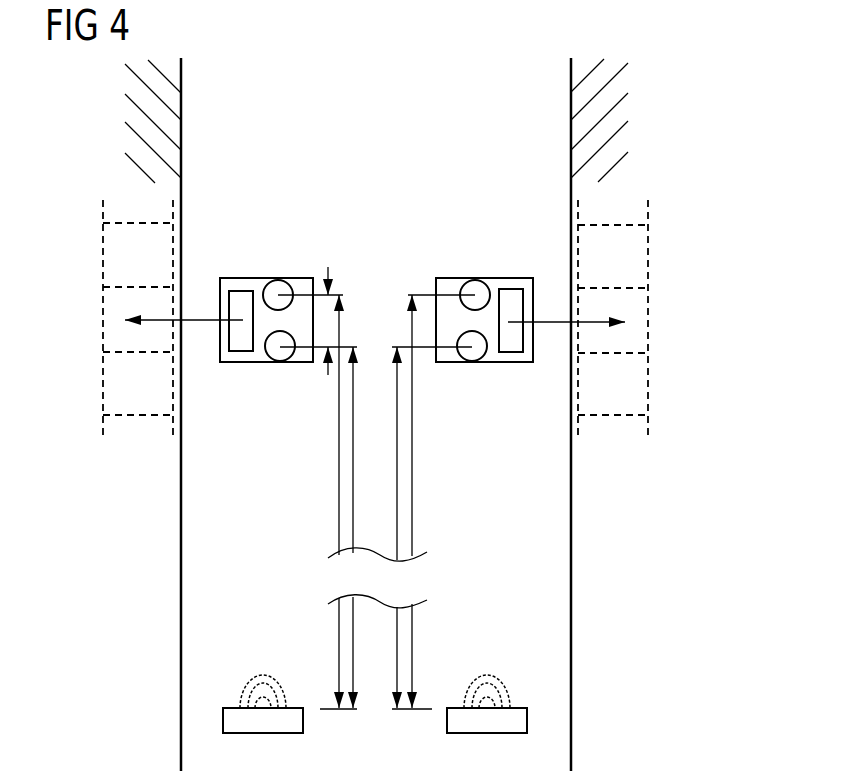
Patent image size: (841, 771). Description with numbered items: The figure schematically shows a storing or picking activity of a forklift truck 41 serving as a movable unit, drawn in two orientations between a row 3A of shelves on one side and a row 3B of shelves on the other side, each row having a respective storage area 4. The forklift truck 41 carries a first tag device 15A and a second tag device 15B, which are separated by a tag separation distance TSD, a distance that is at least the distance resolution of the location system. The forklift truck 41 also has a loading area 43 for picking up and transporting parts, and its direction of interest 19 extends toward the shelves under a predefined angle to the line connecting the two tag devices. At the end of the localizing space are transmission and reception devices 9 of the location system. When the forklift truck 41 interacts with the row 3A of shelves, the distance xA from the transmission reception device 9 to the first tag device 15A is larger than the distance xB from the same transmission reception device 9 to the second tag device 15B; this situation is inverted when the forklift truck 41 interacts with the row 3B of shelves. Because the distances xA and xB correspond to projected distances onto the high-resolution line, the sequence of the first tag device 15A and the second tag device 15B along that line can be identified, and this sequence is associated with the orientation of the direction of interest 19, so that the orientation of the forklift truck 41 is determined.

The row of shelves 3A is at (184, 113).
The row of shelves 3B is at (568, 113).
The storage area 4 is at (113, 338).
The direction of interest 19 is at (196, 318).
The forklift truck 41 is at (300, 278).
The loading area 43 is at (238, 344).
The first tag device 15A is at (262, 280).
The second tag device 15B is at (292, 358).
The tag separation distance TSD is at (324, 297).
The distance xB is at (340, 518).
The distance xA is at (338, 622).
The transmission and reception device 9 is at (447, 720).